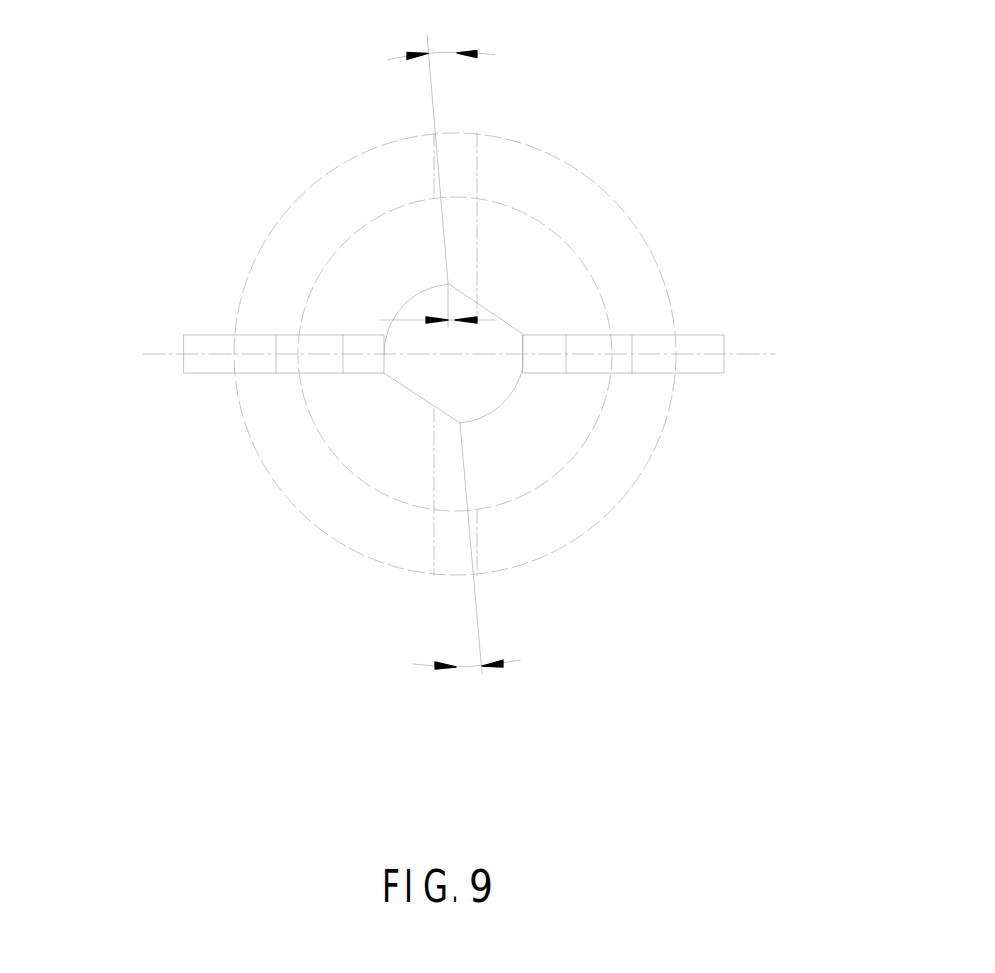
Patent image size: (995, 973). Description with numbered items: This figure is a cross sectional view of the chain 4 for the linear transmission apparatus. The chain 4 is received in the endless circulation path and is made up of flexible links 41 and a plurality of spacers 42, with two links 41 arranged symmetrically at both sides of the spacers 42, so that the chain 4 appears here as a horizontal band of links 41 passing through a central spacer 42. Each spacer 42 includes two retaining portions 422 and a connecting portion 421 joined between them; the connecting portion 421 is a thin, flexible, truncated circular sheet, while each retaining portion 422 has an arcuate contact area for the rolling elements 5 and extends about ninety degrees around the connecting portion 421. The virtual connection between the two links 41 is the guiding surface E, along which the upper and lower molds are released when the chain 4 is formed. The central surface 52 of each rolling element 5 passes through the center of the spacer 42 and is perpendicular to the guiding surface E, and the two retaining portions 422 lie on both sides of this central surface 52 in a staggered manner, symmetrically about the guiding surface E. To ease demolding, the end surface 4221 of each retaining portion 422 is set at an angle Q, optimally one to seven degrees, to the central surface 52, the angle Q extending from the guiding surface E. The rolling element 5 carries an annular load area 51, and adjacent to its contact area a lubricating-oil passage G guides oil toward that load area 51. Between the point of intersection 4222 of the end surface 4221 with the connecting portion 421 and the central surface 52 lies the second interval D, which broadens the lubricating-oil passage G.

The chain 4 is at (155, 312).
The flexible link 41 is at (197, 365).
The spacer 42 is at (385, 400).
The connecting portion 421 is at (437, 382).
The retaining portion 422 is at (350, 268).
The end surface 4221 is at (443, 238).
The point of intersection 4222 is at (448, 285).
The rolling element 5 is at (608, 223).
The load area 51 is at (463, 172).
The central surface 52 is at (455, 585).
The second interval D is at (436, 303).
The angle Q is at (454, 341).
The guiding surface E is at (743, 355).
The lubricating-oil passage G is at (507, 383).